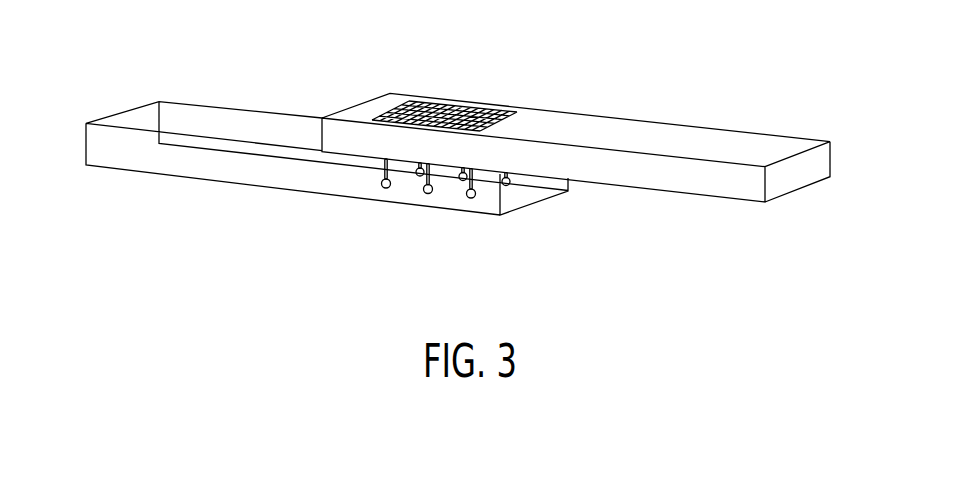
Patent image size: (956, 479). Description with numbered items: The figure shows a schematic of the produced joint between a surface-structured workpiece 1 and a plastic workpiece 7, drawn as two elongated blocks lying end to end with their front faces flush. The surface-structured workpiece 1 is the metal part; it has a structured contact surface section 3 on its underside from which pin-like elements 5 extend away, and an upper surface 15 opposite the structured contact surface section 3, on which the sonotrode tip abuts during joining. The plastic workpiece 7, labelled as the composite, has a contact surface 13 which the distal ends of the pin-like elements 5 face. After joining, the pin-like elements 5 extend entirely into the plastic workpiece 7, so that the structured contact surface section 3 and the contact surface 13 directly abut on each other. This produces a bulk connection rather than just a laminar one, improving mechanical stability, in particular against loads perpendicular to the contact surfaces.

The surface-structured workpiece 1 is at (458, 156).
The structured contact surface section 3 is at (712, 197).
The pin-like elements 5 is at (436, 191).
The plastic workpiece 7 is at (148, 188).
The contact surface 13 is at (257, 121).
The upper surface 15 is at (642, 132).